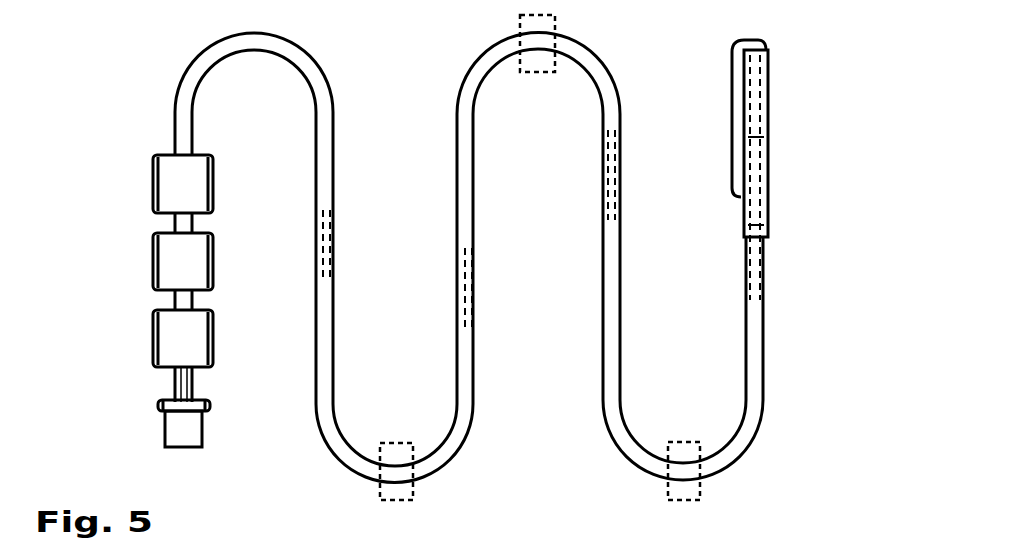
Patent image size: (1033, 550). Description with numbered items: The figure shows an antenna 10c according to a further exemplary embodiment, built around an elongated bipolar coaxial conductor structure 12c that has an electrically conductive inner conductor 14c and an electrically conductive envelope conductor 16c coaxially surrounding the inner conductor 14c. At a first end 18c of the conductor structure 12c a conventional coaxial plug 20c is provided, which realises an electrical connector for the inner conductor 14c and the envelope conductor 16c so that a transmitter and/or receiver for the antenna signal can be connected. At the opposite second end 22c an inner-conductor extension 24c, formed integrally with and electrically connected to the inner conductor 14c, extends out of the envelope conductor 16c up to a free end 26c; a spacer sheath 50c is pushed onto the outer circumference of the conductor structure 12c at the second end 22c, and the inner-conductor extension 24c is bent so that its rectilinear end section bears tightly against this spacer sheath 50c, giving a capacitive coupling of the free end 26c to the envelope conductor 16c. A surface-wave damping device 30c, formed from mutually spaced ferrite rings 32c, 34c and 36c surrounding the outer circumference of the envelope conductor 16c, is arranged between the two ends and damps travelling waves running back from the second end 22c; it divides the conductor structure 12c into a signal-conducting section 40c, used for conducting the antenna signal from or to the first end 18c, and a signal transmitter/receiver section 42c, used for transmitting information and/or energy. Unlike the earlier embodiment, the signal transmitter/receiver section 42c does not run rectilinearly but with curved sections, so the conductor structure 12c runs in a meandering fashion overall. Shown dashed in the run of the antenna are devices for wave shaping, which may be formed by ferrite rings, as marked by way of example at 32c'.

The antenna 10c is at (165, 55).
The coaxial conductor structure 12c is at (330, 65).
The inner conductor 14c is at (475, 292).
The envelope conductor 16c is at (477, 257).
The first end 18c is at (160, 401).
The coaxial plug 20c is at (190, 427).
The second end 22c is at (772, 140).
The inner-conductor extension 24c is at (735, 90).
The free end 26c is at (730, 190).
The surface-wave damping device 30c is at (164, 261).
The ferrite ring 32c is at (219, 184).
The ferrite ring for wave shaping 32c' is at (558, 281).
The ferrite ring 34c is at (200, 260).
The ferrite ring 36c is at (200, 332).
The signal-conducting section 40c is at (162, 409).
The signal transmitter/receiver section 42c is at (510, 378).
The spacer sheath 50c is at (770, 122).